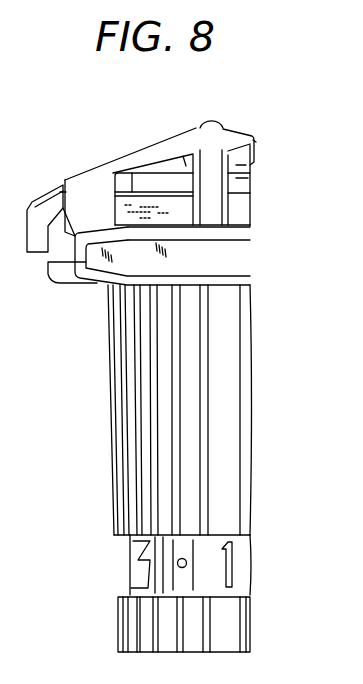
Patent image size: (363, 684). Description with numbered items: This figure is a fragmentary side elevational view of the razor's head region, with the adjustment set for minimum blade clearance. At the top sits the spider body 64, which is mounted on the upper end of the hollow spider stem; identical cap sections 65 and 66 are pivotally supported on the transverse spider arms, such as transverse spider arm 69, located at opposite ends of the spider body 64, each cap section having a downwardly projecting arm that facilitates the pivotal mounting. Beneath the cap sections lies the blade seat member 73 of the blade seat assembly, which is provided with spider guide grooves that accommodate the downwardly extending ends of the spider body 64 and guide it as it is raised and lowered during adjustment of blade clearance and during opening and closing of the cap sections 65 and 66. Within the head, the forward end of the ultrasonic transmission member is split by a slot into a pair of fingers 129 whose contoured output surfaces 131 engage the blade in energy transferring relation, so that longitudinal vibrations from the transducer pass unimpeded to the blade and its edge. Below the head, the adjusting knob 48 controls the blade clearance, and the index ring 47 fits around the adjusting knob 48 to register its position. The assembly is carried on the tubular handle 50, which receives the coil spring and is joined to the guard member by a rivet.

The index ring 47 is at (130, 585).
The adjusting knob 48 is at (247, 428).
The tubular handle 50 is at (119, 631).
The spider body 64 is at (215, 158).
The cap section 65 is at (252, 146).
The cap section 66 is at (113, 176).
The transverse spider arm 69 is at (107, 262).
The blade seat member 73 is at (137, 187).
The fingers 129 is at (186, 166).
The output surfaces 131 is at (183, 158).